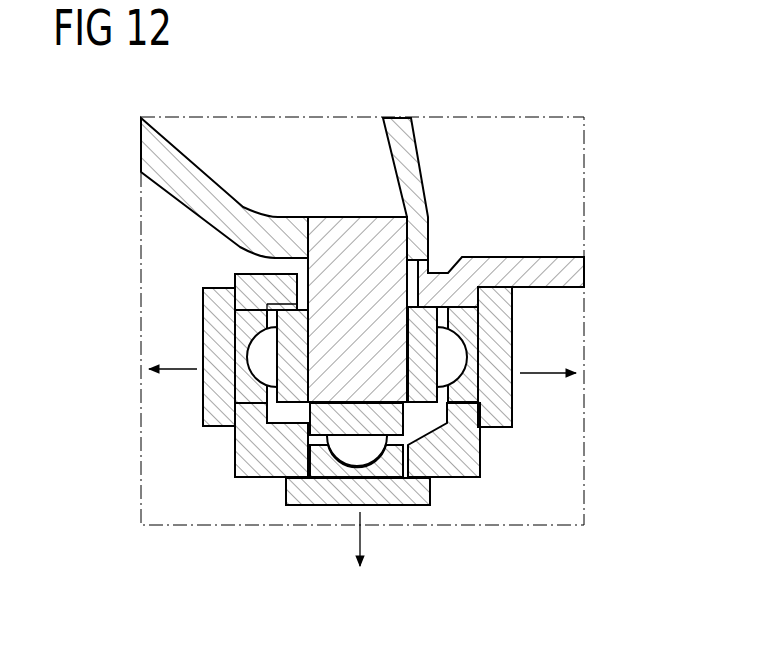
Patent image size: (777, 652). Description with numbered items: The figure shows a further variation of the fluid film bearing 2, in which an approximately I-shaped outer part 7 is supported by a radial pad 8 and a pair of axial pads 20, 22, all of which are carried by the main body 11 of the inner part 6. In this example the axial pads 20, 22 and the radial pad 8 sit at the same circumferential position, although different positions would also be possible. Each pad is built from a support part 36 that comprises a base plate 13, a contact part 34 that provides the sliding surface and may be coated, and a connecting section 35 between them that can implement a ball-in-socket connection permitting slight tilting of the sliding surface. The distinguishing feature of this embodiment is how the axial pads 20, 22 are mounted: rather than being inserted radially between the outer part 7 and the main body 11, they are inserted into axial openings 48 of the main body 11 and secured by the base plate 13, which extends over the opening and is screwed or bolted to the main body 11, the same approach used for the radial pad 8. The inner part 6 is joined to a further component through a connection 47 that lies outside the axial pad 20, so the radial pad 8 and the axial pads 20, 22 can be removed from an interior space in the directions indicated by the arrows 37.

The fluid film bearing 2 is at (505, 198).
The inner part 6 is at (457, 488).
The outer part 7 is at (348, 243).
The radial pad 8 is at (319, 511).
The main body 11 is at (467, 447).
The base plate 13 is at (212, 393).
The axial pad 20 is at (538, 321).
The axial pad 22 is at (191, 347).
The contact part 34 is at (423, 320).
The connecting section 35 is at (453, 367).
The support part 36 is at (470, 390).
The arrows 37 is at (543, 373).
The connection 47 is at (573, 270).
The axial openings 48 is at (255, 310).